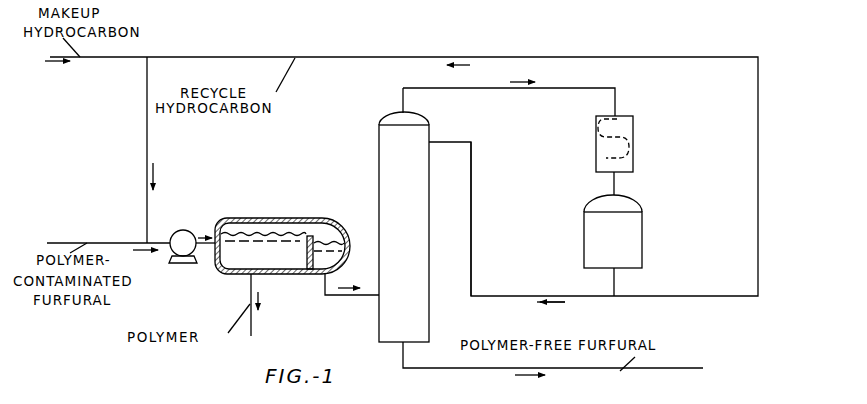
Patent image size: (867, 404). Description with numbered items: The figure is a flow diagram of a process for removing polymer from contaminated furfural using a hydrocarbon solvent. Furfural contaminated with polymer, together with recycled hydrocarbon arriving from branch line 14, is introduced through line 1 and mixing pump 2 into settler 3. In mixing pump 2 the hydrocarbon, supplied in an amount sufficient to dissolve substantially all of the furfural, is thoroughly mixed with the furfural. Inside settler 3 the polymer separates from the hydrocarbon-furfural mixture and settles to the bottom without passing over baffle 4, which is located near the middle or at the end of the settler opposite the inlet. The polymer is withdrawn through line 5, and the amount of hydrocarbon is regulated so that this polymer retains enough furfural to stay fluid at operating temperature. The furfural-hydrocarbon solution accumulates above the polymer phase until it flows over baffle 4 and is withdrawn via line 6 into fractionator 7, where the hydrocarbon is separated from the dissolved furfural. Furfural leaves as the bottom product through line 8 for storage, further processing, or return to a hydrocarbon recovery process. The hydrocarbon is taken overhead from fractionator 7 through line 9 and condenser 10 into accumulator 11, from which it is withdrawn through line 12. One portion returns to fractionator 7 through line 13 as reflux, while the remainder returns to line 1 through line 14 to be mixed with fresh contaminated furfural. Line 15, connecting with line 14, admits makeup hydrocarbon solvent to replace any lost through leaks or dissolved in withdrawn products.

The line 1 is at (100, 243).
The mixing pump 2 is at (186, 230).
The settler 3 is at (272, 218).
The baffle 4 is at (311, 237).
The line 5 is at (251, 283).
The line 6 is at (360, 297).
The fractionator 7 is at (425, 270).
The line 8 is at (455, 369).
The line 9 is at (537, 89).
The condenser 10 is at (633, 137).
The accumulator 11 is at (642, 243).
The line 12 is at (615, 283).
The line 13 is at (510, 295).
The line 14 is at (344, 57).
The line 15 is at (120, 60).